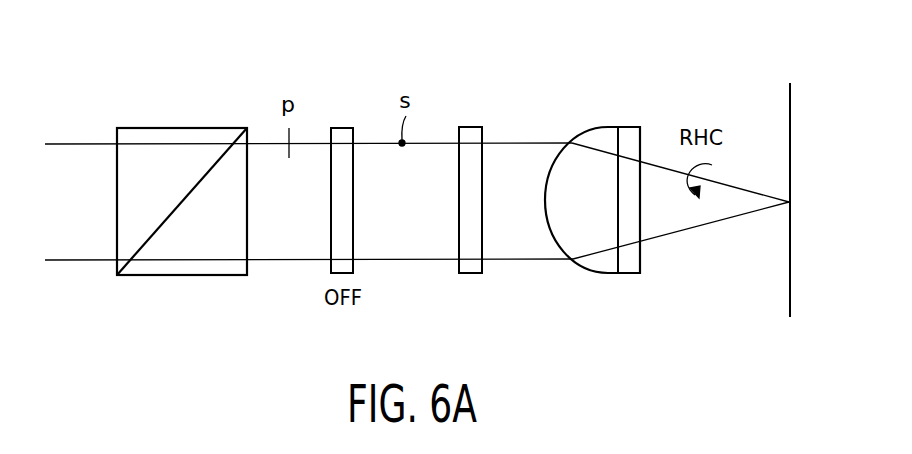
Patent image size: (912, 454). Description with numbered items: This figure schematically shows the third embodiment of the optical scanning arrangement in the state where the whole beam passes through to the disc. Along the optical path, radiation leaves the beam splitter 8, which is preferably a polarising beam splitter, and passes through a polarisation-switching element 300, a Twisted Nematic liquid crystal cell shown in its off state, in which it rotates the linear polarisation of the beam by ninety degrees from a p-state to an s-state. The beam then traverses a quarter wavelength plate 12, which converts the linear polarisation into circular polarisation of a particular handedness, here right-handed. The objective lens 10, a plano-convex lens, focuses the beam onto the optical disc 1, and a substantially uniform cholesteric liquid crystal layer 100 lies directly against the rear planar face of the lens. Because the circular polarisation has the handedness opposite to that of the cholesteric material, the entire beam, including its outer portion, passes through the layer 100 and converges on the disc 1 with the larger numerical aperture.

The beam splitter 8 is at (183, 127).
The polarisation-switching element 300 is at (344, 127).
The quarter wavelength plate 12 is at (471, 126).
The objective lens 10 is at (590, 127).
The cholesteric liquid crystal layer 100 is at (628, 126).
The optical disc 1 is at (789, 99).